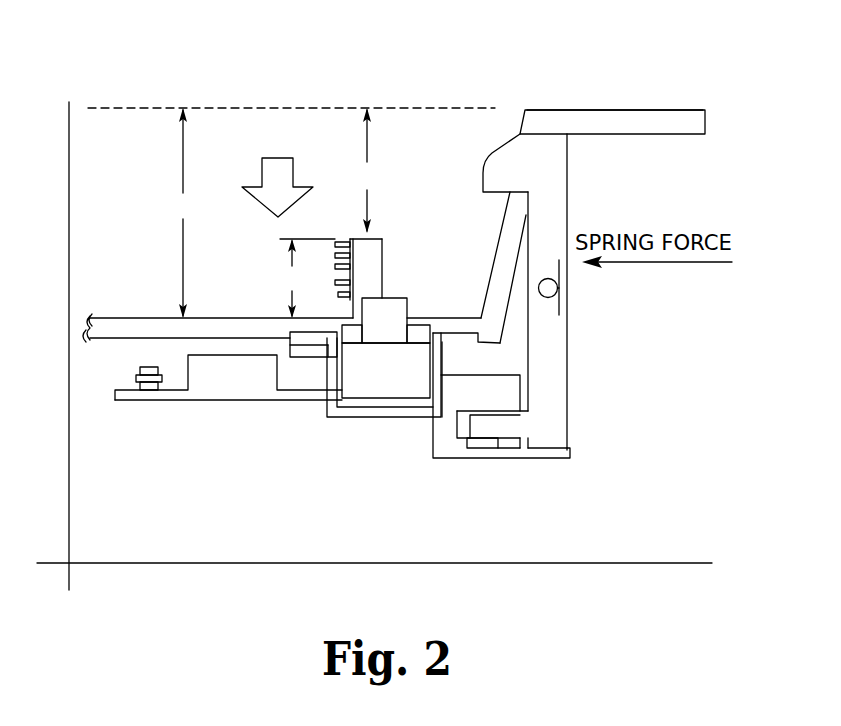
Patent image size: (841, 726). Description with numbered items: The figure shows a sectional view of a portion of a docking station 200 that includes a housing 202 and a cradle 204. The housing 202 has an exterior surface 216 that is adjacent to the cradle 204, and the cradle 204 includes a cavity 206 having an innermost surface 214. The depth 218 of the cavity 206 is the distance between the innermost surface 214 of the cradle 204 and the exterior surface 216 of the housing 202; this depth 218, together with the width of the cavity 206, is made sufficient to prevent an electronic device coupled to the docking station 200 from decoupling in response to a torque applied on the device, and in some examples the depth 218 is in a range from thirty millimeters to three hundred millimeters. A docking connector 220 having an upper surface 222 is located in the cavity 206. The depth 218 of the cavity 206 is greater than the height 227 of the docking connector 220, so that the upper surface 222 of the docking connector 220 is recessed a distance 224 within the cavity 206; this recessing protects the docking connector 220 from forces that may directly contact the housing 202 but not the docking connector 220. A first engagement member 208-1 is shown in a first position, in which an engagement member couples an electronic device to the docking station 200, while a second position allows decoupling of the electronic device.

The docking station 200 is at (126, 60).
The housing 202 is at (685, 104).
The cradle 204 is at (488, 224).
The cavity 206 is at (146, 178).
The first engagement member 208-1 is at (567, 368).
The innermost surface 214 is at (127, 318).
The exterior surface 216 is at (603, 108).
The depth 218 is at (183, 213).
The docking connector 220 is at (368, 273).
The upper surface 222 is at (385, 240).
The distance 224 is at (366, 170).
The height 227 is at (305, 278).